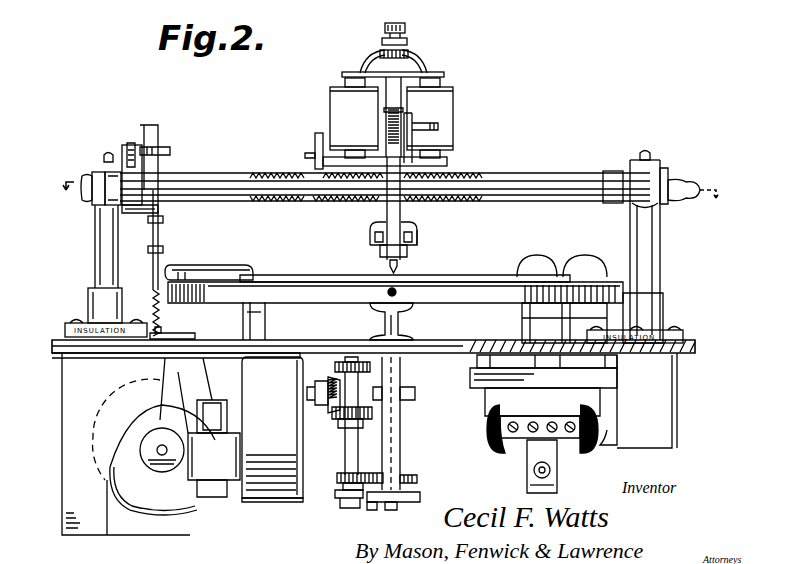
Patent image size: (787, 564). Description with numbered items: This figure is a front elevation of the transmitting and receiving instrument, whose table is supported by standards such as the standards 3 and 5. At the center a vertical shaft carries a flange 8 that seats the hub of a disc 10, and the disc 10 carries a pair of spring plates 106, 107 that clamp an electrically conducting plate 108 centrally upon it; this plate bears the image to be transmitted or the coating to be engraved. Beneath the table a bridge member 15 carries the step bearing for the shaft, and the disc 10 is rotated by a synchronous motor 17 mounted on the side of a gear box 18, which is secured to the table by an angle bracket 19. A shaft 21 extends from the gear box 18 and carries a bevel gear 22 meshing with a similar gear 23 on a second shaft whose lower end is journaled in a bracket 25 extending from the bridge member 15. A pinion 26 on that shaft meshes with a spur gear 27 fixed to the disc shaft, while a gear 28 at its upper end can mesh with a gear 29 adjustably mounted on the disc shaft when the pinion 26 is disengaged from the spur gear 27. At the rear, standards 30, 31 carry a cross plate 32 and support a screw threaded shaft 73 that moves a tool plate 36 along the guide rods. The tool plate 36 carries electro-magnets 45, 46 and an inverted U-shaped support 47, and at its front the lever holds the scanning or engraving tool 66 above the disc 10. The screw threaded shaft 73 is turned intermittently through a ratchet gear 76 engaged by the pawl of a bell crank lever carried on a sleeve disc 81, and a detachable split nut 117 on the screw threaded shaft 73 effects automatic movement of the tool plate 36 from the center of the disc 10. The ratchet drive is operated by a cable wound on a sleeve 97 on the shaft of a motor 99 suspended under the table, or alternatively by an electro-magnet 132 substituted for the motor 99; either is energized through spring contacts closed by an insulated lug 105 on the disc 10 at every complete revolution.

The standard 3 is at (673, 393).
The standard 5 is at (62, 380).
The flange 8 is at (402, 327).
The disc 10 is at (470, 284).
The bridge member 15 is at (418, 494).
The synchronous motor 17 is at (238, 495).
The gear box 18 is at (263, 498).
The angle bracket 19 is at (298, 450).
The shaft 21 is at (330, 397).
The bevel gear 22 is at (331, 410).
The bevel gear 23 is at (338, 425).
The bracket 25 is at (337, 500).
The pinion 26 is at (341, 473).
The spur gear 27 is at (430, 466).
The gear 28 is at (340, 360).
The gear 29 is at (435, 375).
The standard 30 is at (95, 252).
The standard 31 is at (630, 233).
The cross plate 32 is at (88, 166).
The tool plate 36 is at (447, 165).
The electro-magnet 45 is at (334, 108).
The electro-magnet 46 is at (446, 106).
The inverted U-shaped support 47 is at (413, 60).
The scanning or engraving tool 66 is at (396, 263).
The screw threaded shaft 73 is at (218, 162).
The ratchet gear 76 is at (128, 213).
The sleeve disc 81 is at (152, 144).
The sleeve 97 is at (162, 472).
The motor 99 is at (188, 510).
The insulated lug 105 is at (386, 293).
The spring plate 106 is at (263, 258).
The spring plate 107 is at (578, 242).
The electrically conducting plate 108 is at (335, 265).
The detachable split nut 117 is at (315, 140).
The electro-magnet 132 is at (519, 456).